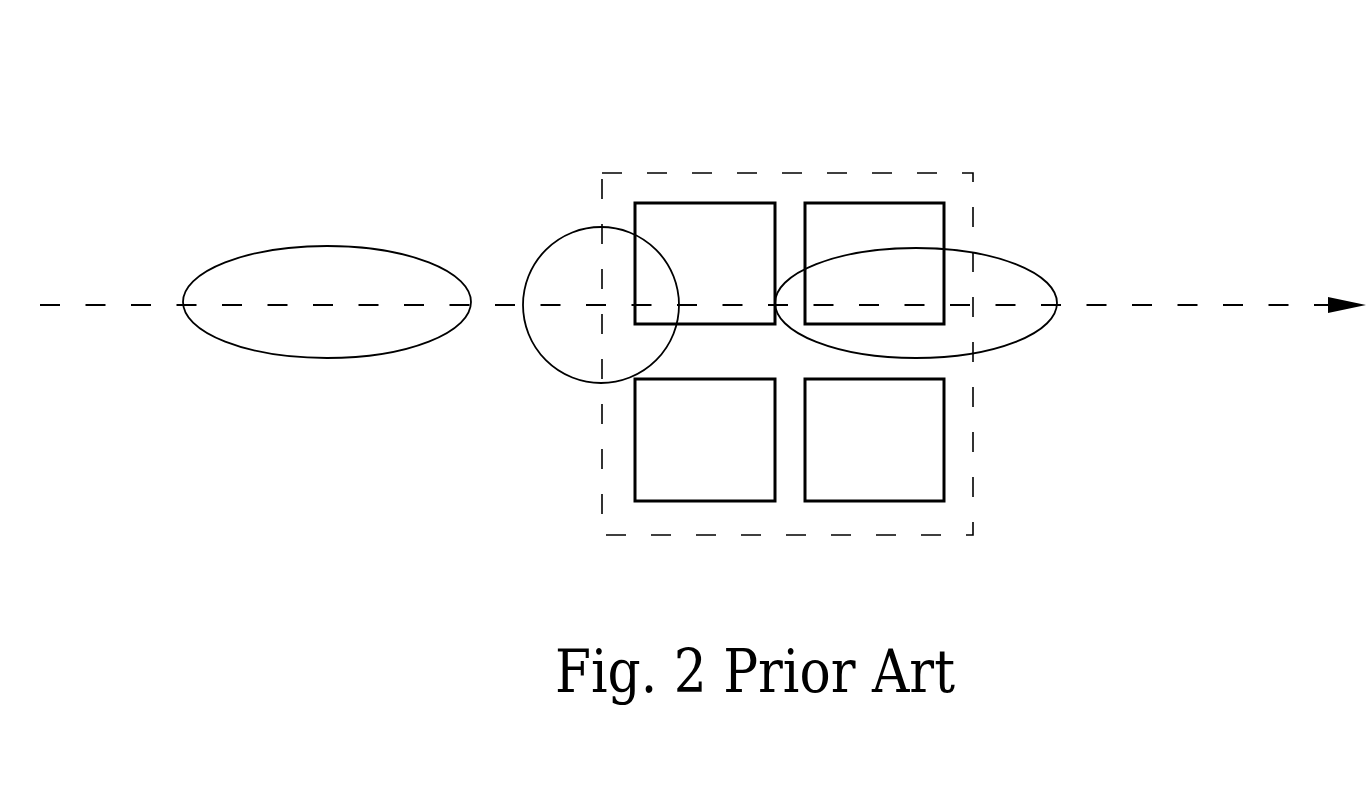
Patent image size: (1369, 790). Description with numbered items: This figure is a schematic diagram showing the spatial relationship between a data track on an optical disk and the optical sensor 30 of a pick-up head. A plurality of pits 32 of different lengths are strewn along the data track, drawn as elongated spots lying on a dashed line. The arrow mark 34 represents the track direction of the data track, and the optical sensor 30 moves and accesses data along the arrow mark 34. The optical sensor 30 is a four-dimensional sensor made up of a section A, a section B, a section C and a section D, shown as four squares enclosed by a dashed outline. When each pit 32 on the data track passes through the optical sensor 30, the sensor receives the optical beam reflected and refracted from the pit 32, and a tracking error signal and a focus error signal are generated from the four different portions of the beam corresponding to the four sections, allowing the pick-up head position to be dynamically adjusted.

The optical sensor 30 is at (872, 172).
The pit 32 is at (242, 350).
The arrow mark 34 is at (1182, 305).